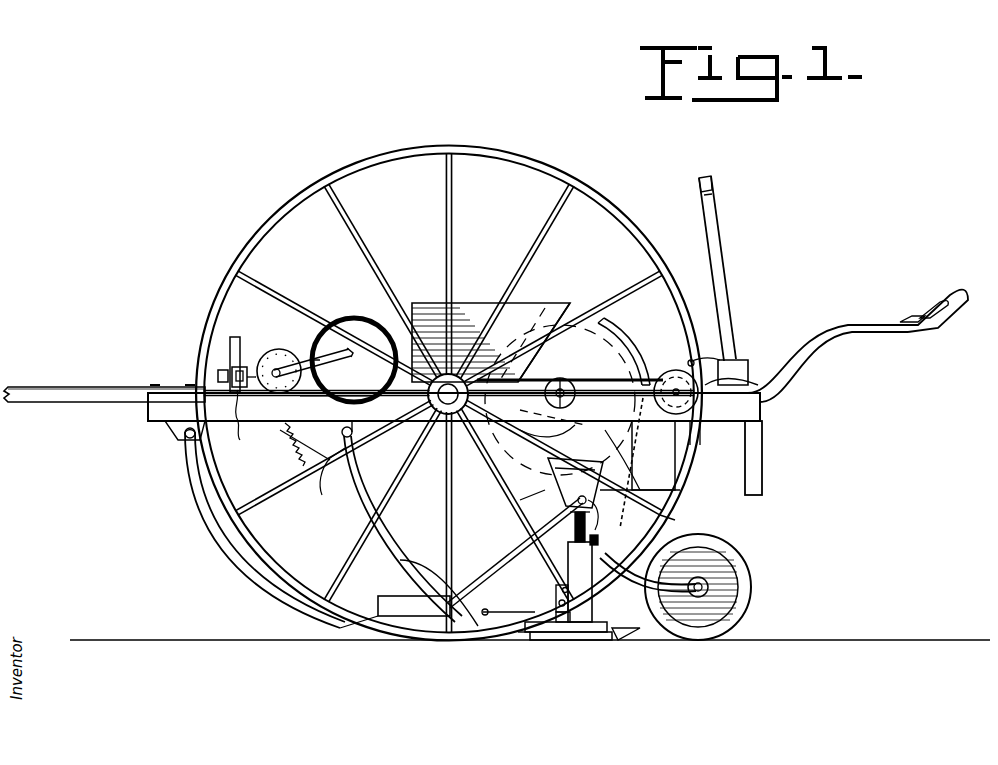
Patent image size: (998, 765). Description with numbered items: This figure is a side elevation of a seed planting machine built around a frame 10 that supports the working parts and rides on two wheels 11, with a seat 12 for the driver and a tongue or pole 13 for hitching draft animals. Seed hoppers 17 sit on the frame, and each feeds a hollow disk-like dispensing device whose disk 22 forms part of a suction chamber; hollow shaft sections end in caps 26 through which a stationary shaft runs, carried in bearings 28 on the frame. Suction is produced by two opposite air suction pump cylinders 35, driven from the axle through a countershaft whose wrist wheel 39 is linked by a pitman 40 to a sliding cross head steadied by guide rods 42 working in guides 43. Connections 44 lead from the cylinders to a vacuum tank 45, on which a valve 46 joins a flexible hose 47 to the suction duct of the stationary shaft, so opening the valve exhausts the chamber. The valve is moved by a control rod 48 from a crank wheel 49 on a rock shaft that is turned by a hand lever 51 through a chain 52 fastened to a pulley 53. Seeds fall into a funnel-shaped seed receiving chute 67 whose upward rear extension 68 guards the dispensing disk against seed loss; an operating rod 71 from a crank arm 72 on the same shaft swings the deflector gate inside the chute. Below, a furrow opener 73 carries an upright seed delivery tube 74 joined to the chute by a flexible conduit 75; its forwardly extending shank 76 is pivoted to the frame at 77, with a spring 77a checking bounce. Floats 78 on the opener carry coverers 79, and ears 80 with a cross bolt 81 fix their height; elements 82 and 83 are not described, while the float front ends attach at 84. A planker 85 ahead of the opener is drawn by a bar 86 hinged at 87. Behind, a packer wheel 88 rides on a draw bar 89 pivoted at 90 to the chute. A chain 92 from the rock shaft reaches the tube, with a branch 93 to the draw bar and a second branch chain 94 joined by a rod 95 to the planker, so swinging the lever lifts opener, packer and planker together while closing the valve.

The frame 10 is at (755, 415).
The wheels 11 is at (338, 172).
The seat 12 is at (905, 315).
The tongue or pole 13 is at (62, 387).
The seed hoppers 17 is at (538, 300).
The disk 22 is at (562, 318).
The caps 26 is at (566, 388).
The bearings 28 is at (560, 378).
The air suction pump cylinders 35 is at (300, 355).
The wrist wheel 39 is at (230, 345).
The pitman 40 is at (218, 374).
The guide rods 42 is at (231, 419).
The guides 43 is at (260, 360).
The connections 44 is at (335, 360).
The vacuum tank 45 is at (356, 318).
The valve 46 is at (335, 406).
The flexible hose 47 is at (358, 432).
The control rod 48 is at (552, 427).
The crank wheel 49 is at (698, 443).
The hand lever 51 is at (722, 298).
The chain 52 is at (698, 358).
The pulley 53 is at (666, 370).
The seed receiving chute 67 is at (548, 471).
The upward rear extension 68 is at (618, 350).
The operating rod 71 is at (672, 510).
The crank arm 72 is at (676, 470).
The furrow opener 73 is at (552, 642).
The seed delivery tube 74 is at (580, 582).
The flexible conduit 75 is at (574, 530).
The shank 76 is at (385, 500).
The pivot 77 is at (320, 440).
The spring 77a is at (323, 479).
The floats 78 is at (598, 642).
The coverers 79 is at (622, 642).
The ears 80 is at (568, 640).
The cross bolt 81 is at (578, 612).
The slide block 82 is at (553, 598).
The pin 83 is at (556, 588).
The float attachment 84 is at (486, 608).
The planker 85 is at (372, 622).
The bar 86 is at (225, 553).
The hinge 87 is at (182, 440).
The packer wheel 88 is at (755, 575).
The draw bar 89 is at (645, 592).
The pivot 90 is at (560, 493).
The chain 92 is at (636, 440).
The branch 93 is at (600, 527).
The branch chain 94 is at (618, 430).
The rod 95 is at (500, 570).